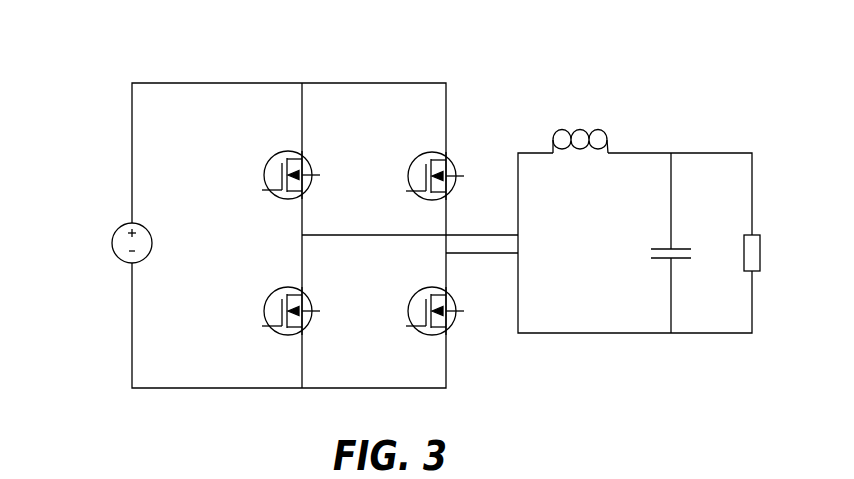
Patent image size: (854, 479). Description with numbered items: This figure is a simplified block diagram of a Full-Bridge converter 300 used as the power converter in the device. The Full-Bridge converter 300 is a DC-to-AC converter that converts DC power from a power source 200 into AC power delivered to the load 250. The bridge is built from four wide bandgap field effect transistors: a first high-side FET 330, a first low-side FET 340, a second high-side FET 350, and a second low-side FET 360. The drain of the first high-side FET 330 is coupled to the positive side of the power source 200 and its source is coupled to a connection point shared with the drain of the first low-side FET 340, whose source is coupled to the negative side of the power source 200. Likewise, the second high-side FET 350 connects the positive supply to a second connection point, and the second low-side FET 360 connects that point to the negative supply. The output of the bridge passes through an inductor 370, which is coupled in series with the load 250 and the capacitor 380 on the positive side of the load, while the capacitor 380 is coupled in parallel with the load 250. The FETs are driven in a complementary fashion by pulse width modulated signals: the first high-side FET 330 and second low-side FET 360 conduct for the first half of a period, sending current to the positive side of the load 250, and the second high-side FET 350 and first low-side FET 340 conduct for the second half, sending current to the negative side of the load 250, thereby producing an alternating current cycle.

The Full-Bridge converter 300 is at (99, 74).
The power source 200 is at (112, 242).
The first high-side field effect transistor 330 is at (265, 178).
The first low-side FET 340 is at (265, 315).
The second high-side FET 350 is at (409, 178).
The second low-side FET 360 is at (408, 317).
The inductor 370 is at (558, 133).
The capacitor 380 is at (658, 247).
The power output (load) 250 is at (752, 252).